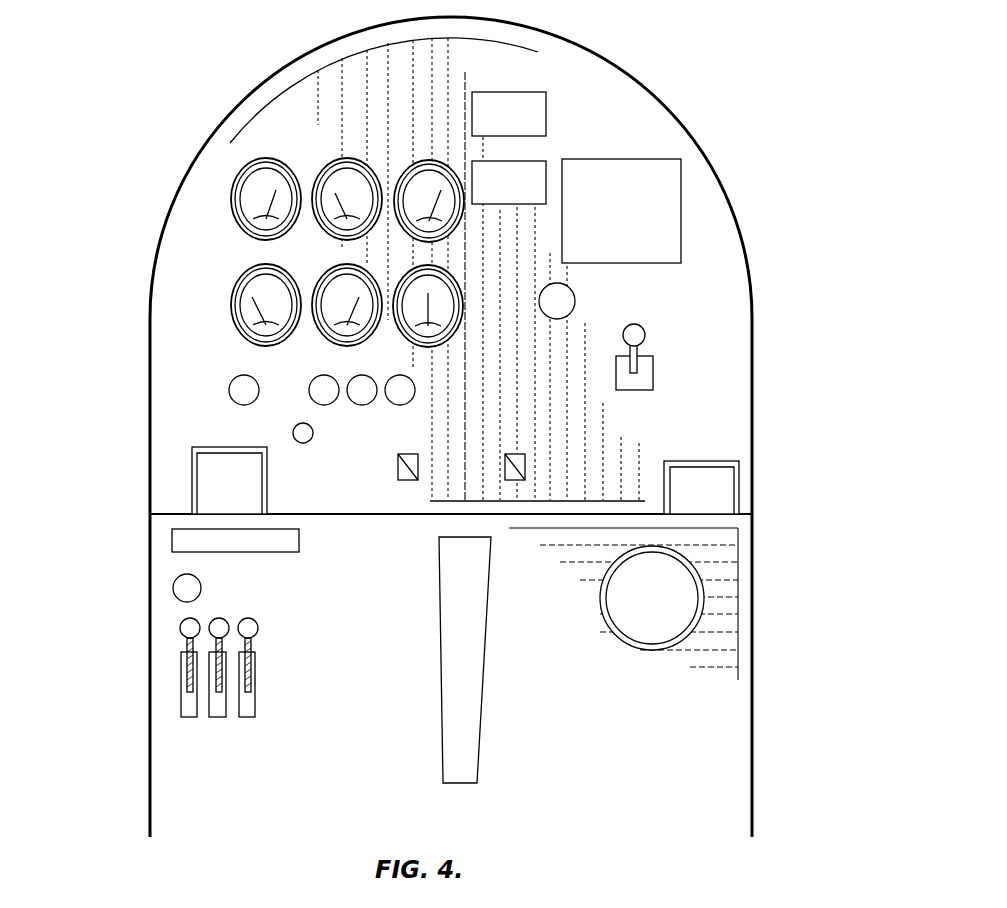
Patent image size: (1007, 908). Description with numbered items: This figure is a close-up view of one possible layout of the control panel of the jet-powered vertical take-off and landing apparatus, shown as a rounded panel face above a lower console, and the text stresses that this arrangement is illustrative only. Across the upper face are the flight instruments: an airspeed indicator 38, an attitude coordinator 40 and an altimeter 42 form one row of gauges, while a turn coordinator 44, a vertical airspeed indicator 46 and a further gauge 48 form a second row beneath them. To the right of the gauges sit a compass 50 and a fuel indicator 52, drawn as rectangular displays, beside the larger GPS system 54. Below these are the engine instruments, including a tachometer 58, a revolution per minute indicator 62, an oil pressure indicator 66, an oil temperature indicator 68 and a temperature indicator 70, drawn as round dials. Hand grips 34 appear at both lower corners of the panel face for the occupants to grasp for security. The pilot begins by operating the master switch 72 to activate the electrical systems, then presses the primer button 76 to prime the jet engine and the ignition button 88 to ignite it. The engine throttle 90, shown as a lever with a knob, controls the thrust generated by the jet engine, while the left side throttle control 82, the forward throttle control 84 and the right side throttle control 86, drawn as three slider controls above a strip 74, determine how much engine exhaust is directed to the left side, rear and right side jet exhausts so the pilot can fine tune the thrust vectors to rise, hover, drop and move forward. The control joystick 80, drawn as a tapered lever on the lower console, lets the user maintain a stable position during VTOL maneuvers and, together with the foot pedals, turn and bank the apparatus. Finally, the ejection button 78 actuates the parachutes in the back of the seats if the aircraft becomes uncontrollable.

The hand grips 34 is at (190, 478).
The airspeed indicator 38 is at (248, 236).
The attitude coordinator 40 is at (336, 238).
The altimeter 42 is at (436, 244).
The turn coordinator 44 is at (248, 340).
The vertical airspeed indicator 46 is at (324, 343).
The gauge 48 is at (445, 340).
The compass 50 is at (528, 92).
The fuel indicator 52 is at (542, 167).
The GPS system 54 is at (658, 158).
The tachometer 58 is at (575, 298).
The revolution per minute indicator 62 is at (229, 388).
The oil pressure indicator 66 is at (324, 405).
The oil temperature indicator 68 is at (362, 405).
The temperature indicator 70 is at (415, 391).
The master switch 72 is at (407, 482).
The panel 74 is at (172, 540).
The primer button 76 is at (173, 592).
The ejection button 78 is at (303, 443).
The control joystick 80 is at (480, 676).
The left side throttle control 82 is at (181, 627).
The forward throttle control 84 is at (219, 617).
The right side throttle control 86 is at (258, 628).
The ignition button 88 is at (515, 480).
The engine throttle 90 is at (645, 330).